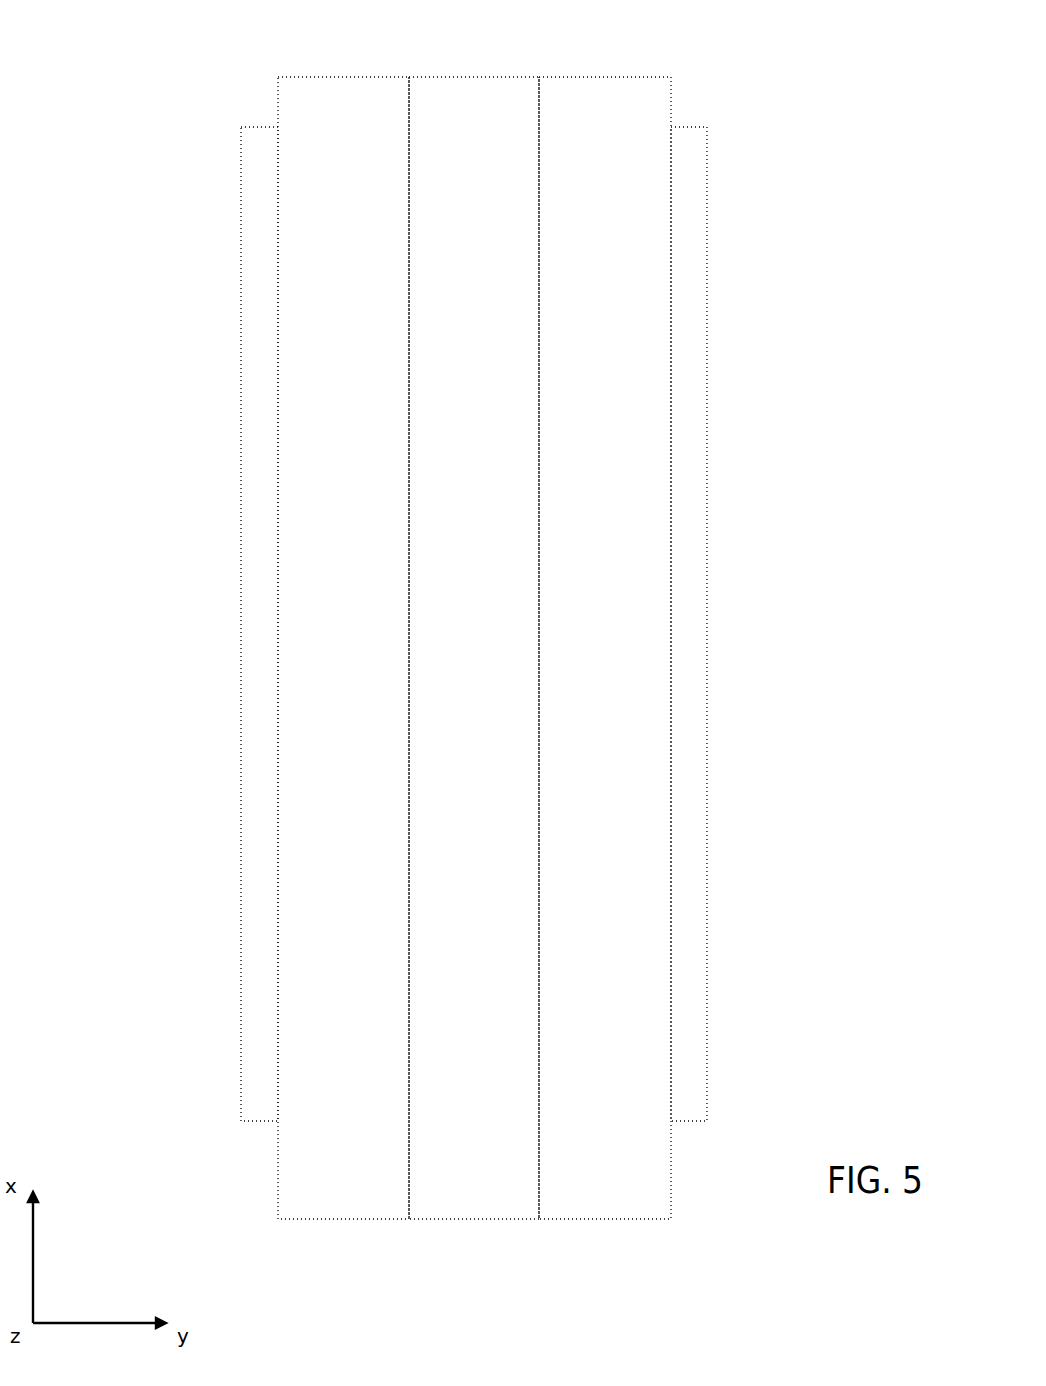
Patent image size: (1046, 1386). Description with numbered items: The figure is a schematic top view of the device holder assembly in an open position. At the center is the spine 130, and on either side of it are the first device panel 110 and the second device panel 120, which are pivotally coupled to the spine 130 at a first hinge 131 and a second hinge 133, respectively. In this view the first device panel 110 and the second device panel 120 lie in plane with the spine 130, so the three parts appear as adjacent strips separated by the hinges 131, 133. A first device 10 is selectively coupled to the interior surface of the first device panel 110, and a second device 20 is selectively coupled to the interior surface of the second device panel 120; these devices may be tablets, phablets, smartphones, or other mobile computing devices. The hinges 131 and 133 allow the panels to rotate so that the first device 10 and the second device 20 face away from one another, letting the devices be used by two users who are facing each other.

The first device 10 is at (255, 477).
The second device 20 is at (702, 453).
The first device panel 110 is at (328, 132).
The second device panel 120 is at (631, 127).
The spine 130 is at (475, 130).
The first hinge 131 is at (410, 110).
The second hinge 133 is at (541, 110).